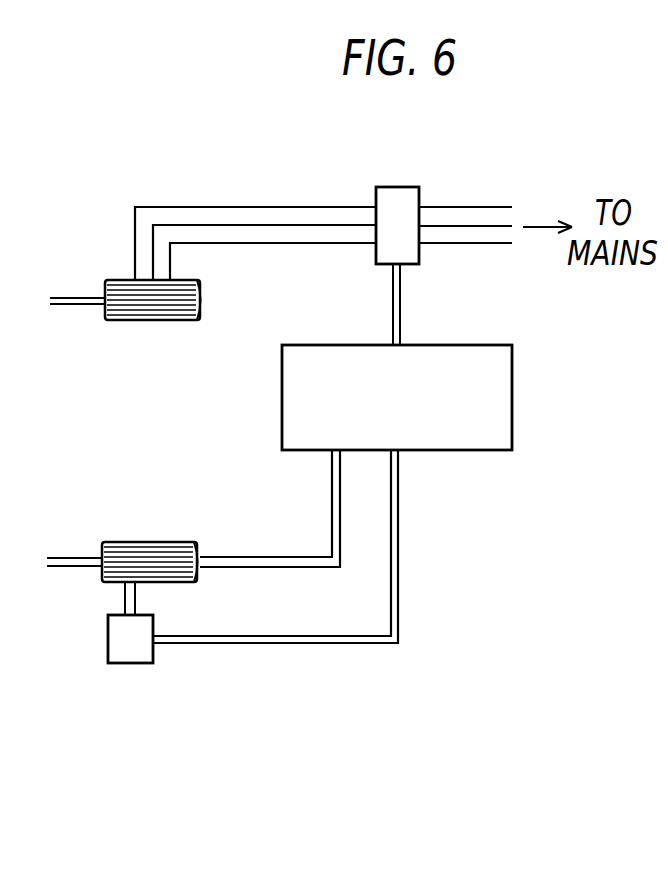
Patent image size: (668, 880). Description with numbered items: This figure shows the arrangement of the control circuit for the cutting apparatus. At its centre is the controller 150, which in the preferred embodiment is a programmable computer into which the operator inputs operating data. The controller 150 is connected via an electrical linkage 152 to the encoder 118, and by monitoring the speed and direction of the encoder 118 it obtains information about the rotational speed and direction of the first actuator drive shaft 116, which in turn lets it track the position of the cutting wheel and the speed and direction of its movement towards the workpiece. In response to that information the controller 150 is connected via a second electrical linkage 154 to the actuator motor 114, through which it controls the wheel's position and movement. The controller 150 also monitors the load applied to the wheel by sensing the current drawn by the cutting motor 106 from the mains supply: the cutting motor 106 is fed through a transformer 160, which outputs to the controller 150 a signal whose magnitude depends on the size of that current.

The cutting motor 106 is at (155, 320).
The actuator motor 114 is at (143, 542).
The first actuator drive shaft 116 is at (60, 558).
The encoder 118 is at (138, 663).
The controller 150 is at (500, 450).
The electrical linkage 152 is at (298, 643).
The electrical linkage 154 is at (258, 557).
The transformer 160 is at (398, 187).